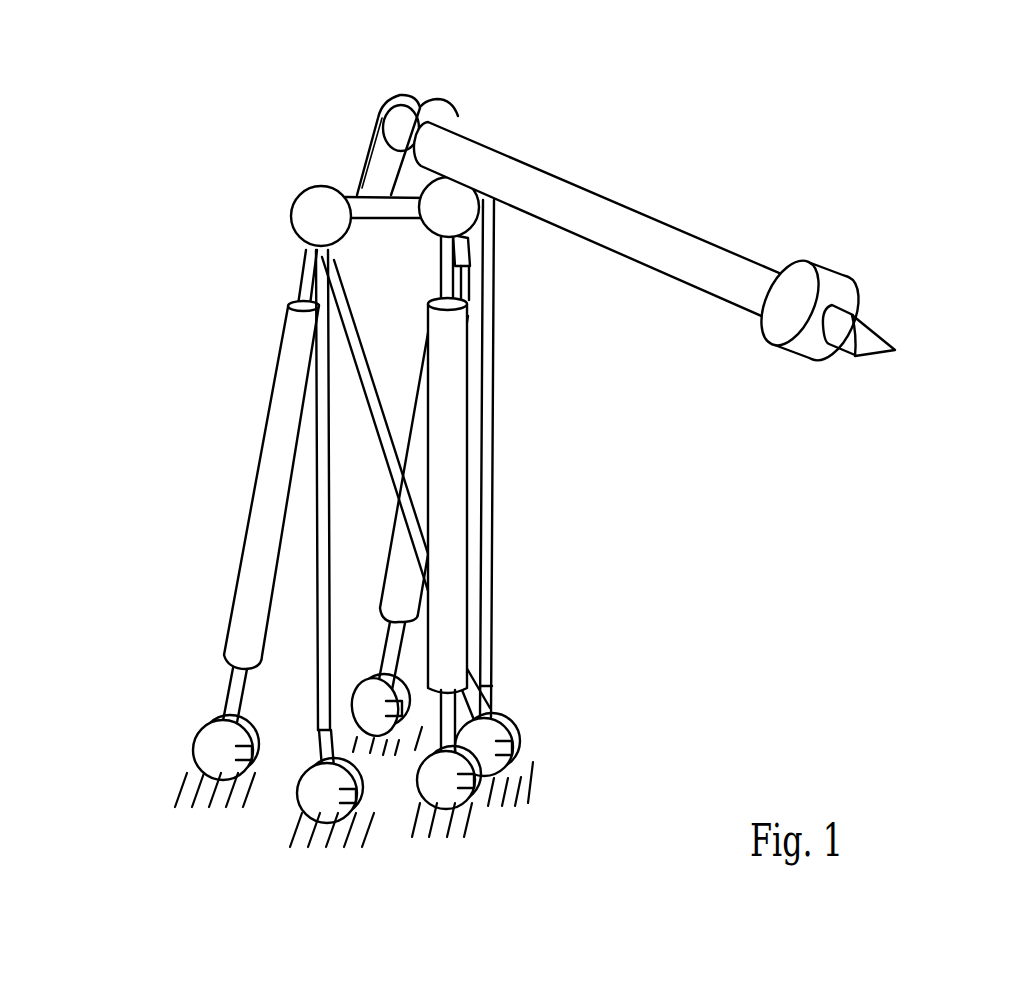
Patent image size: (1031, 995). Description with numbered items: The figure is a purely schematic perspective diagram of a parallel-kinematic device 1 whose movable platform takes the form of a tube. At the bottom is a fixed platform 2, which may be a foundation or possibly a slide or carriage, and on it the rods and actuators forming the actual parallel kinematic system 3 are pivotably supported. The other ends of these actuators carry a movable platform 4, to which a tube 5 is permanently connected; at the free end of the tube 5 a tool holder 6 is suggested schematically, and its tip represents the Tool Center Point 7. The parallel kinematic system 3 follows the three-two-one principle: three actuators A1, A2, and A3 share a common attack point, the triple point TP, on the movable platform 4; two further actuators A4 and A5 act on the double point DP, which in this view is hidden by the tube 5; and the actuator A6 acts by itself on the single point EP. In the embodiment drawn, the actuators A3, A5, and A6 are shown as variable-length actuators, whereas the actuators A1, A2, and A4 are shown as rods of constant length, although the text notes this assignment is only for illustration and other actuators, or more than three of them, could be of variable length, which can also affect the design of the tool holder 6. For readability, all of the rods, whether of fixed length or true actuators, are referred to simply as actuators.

The parallel-kinematic device 1 is at (912, 203).
The fixed platform 2 is at (622, 758).
The parallel kinematic system 3 is at (185, 537).
The movable platform 4 is at (382, 176).
The tube 5 is at (650, 236).
The tool holder 6 is at (845, 322).
The Tool Center Point (TCP) 7 is at (907, 346).
The double point DP is at (510, 137).
The triple point TP is at (317, 213).
The single point EP is at (460, 206).
The actuator A1 is at (362, 370).
The actuator A2 is at (325, 518).
The actuator A3 is at (277, 449).
The actuator A4 is at (484, 368).
The actuator A5 is at (408, 584).
The actuator A6 is at (450, 472).